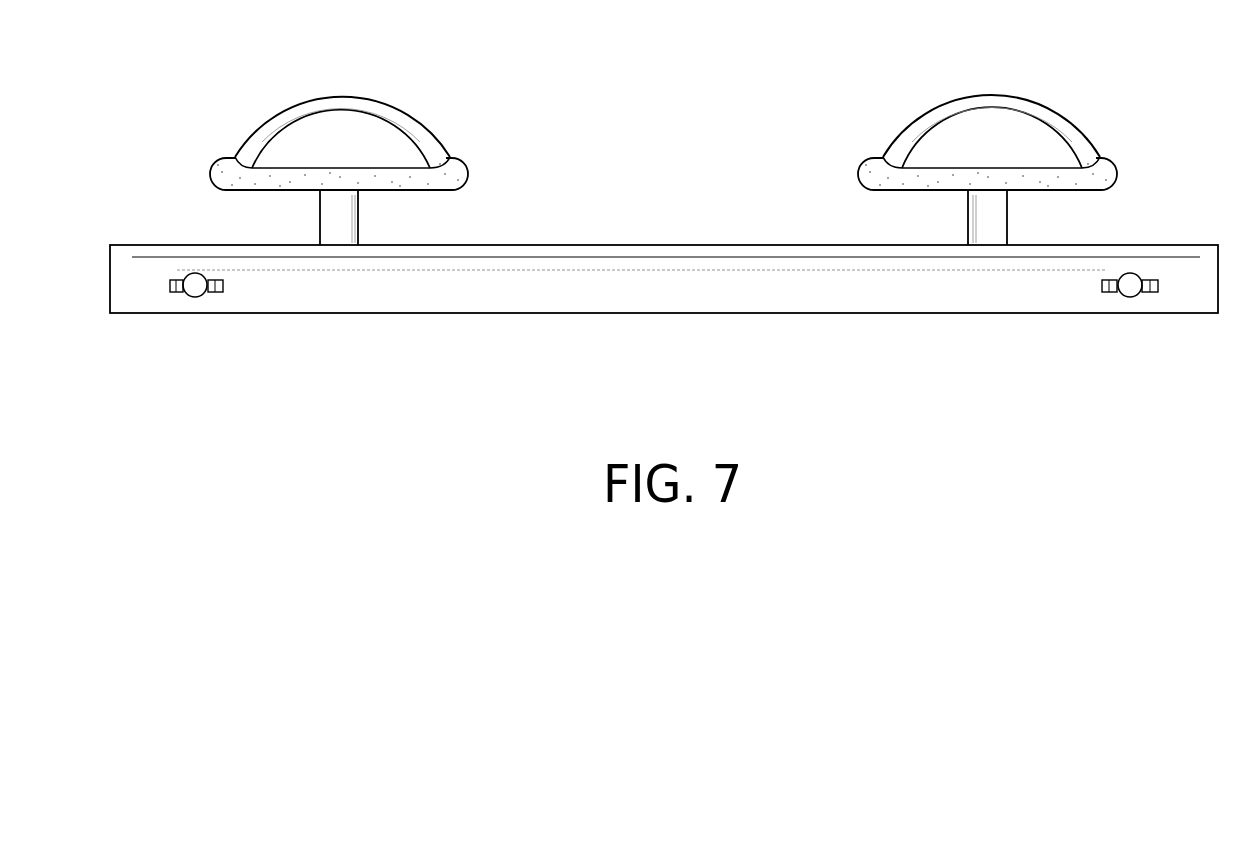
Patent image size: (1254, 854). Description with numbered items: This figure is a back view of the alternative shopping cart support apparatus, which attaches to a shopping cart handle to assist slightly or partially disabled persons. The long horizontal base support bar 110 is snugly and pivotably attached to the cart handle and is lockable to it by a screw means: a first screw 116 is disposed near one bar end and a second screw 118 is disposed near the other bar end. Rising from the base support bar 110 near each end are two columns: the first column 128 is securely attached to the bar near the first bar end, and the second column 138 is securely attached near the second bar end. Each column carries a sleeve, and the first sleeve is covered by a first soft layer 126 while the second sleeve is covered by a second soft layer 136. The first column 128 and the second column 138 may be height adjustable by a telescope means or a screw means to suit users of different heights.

The base support bar 110 is at (620, 263).
The first screw 116 is at (1133, 297).
The second screw 118 is at (193, 297).
The first soft layer 126 is at (1100, 160).
The first column 128 is at (993, 218).
The second soft layer 136 is at (237, 158).
The second column 138 is at (337, 217).